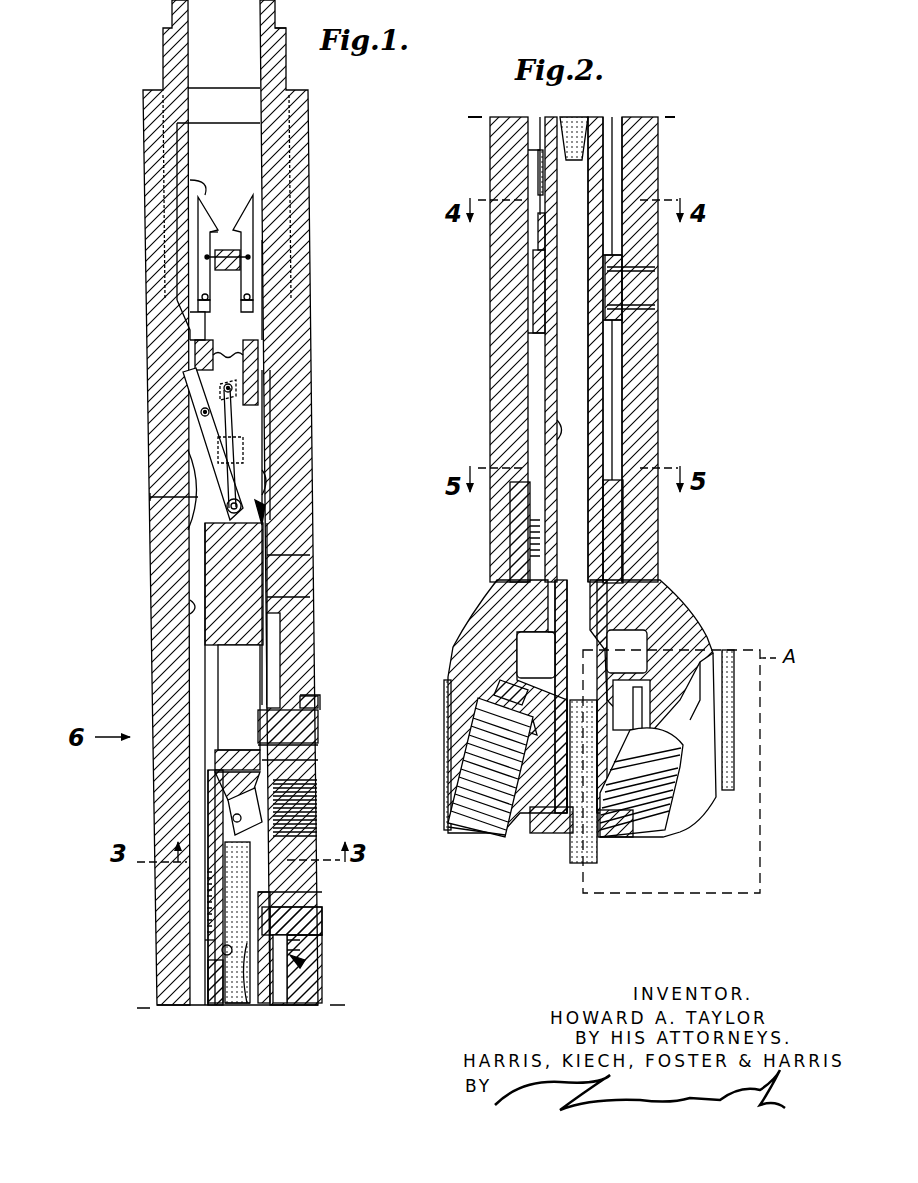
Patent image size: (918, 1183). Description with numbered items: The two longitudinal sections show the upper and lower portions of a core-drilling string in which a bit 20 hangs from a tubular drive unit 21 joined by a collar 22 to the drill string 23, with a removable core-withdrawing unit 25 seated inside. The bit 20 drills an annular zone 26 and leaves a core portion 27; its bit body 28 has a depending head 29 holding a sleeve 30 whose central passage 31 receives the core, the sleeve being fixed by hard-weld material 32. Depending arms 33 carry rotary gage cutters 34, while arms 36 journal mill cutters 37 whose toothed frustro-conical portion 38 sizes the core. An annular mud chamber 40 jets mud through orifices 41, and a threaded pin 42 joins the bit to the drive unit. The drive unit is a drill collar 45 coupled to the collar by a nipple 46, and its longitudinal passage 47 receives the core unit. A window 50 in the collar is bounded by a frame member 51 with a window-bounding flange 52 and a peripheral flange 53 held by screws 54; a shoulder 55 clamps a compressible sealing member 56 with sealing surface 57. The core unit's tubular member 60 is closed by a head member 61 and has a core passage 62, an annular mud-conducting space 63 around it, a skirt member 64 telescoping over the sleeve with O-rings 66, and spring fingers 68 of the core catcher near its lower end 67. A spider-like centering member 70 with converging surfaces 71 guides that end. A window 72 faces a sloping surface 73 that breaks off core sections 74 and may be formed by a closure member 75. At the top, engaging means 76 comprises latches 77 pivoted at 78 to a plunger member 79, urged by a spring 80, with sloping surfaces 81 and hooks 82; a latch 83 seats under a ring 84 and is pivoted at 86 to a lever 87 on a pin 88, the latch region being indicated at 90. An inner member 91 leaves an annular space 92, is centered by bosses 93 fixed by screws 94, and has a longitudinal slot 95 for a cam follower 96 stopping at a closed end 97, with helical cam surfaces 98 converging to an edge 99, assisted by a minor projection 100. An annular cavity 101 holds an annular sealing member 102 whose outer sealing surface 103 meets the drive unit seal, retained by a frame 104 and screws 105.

In FIG. 2, the bit 20 is at (680, 590).
In FIG. 1, the tubular drive unit 21 is at (146, 535).
In FIG. 2, the tubular drive unit 21 is at (662, 343).
In FIG. 1, the collar 22 is at (300, 108).
In FIG. 1, the drill string 23 is at (284, 16).
In FIG. 1, the core-withdrawing unit 25 is at (205, 793).
In FIG. 2, the core-withdrawing unit 25 is at (548, 385).
In FIG. 2, the annular zone 26 is at (712, 830).
In FIG. 1, the core portion 27 is at (232, 1006).
In FIG. 2, the core portion 27 is at (585, 848).
In FIG. 2, the bit body 28 is at (690, 606).
In FIG. 2, the depending head 29 is at (530, 712).
In FIG. 2, the sleeve 30 is at (500, 770).
In FIG. 2, the central passage 31 is at (568, 842).
In FIG. 2, the hard-weld or abrasive-resisting material 32 is at (535, 845).
In FIG. 2, the depending arms 33 is at (462, 700).
In FIG. 2, the rotary gage cutters 34 is at (470, 812).
In FIG. 2, the depending arms 36 is at (695, 656).
In FIG. 2, the mill cutters 37 is at (650, 838).
In FIG. 2, the toothed frustro-conical portion 38 is at (598, 846).
In FIG. 2, the annular mud chamber 40 is at (522, 645).
In FIG. 2, the orifices 41 is at (505, 690).
In FIG. 2, the externally threaded pin 42 is at (520, 535).
In FIG. 1, the drill collar 45 is at (300, 440).
In FIG. 1, the nipple 46 is at (300, 252).
In FIG. 1, the longitudinal passage 47 is at (192, 617).
In FIG. 1, the window 50 is at (292, 748).
In FIG. 1, the frame member 51 is at (322, 717).
In FIG. 1, the window-bounding flange 52 is at (270, 762).
In FIG. 1, the peripheral flange 53 is at (308, 698).
In FIG. 1, the screws 54 is at (302, 680).
In FIG. 1, the shoulder 55 is at (305, 940).
In FIG. 1, the compressible sealing member 56 is at (300, 730).
In FIG. 1, the sealing surface 57 is at (215, 920).
In FIG. 1, the tubular member 60 is at (207, 888).
In FIG. 2, the tubular member 60 is at (625, 385).
In FIG. 1, the head member 61 is at (207, 570).
In FIG. 1, the core passage 62 is at (224, 950).
In FIG. 2, the core passage 62 is at (560, 420).
In FIG. 1, the annular mud-conducting space 63 is at (220, 660).
In FIG. 2, the skirt member 64 is at (640, 655).
In FIG. 2, the rubber O-rings 66 is at (644, 700).
In FIG. 2, the inner tube lower end 67 is at (510, 610).
In FIG. 2, the spring fingers 68 is at (553, 625).
In FIG. 2, the centering member 70 is at (612, 525).
In FIG. 2, the downwardly converging surfaces 71 is at (615, 470).
In FIG. 1, the window 72 is at (245, 780).
In FIG. 1, the sloping surface 73 is at (240, 820).
In FIG. 1, the core sections 74 is at (262, 812).
In FIG. 1, the closure member 75 is at (213, 768).
In FIG. 1, the engaging means 76 is at (192, 316).
In FIG. 1, the latches 77 is at (200, 250).
In FIG. 1, the pivot 78 is at (203, 292).
In FIG. 1, the plunger member 79 is at (195, 328).
In FIG. 1, the spring 80 is at (242, 257).
In FIG. 1, the sloping surfaces 81 is at (200, 188).
In FIG. 1, the hooks 82 is at (215, 232).
In FIG. 1, the latch 83 is at (190, 384).
In FIG. 1, the ring 84 is at (260, 340).
In FIG. 1, the pivot 86 is at (203, 412).
In FIG. 1, the lever 87 is at (240, 395).
In FIG. 1, the pin 88 is at (234, 388).
In FIG. 1, the pointer 90 is at (262, 522).
In FIG. 1, the inner member 91 is at (270, 620).
In FIG. 2, the inner member 91 is at (630, 130).
In FIG. 1, the annular space 92 is at (282, 630).
In FIG. 2, the annular space 92 is at (625, 165).
In FIG. 2, the bosses 93 is at (538, 295).
In FIG. 2, the screws 94 is at (635, 262).
In FIG. 1, the longitudinal slot 95 is at (210, 985).
In FIG. 2, the longitudinal slot 95 is at (540, 150).
In FIG. 2, the cam follower 96 is at (538, 228).
In FIG. 2, the closed end 97 is at (538, 252).
In FIG. 1, the helical cam surfaces 98 is at (230, 672).
In FIG. 1, the edge 99 is at (268, 490).
In FIG. 1, the minor projection 100 is at (190, 478).
In FIG. 1, the annular cavity 101 is at (262, 900).
In FIG. 1, the annular sealing member 102 is at (207, 940).
In FIG. 1, the outer sealing surface 103 is at (290, 925).
In FIG. 1, the frame 104 is at (310, 957).
In FIG. 1, the screws 105 is at (248, 1005).